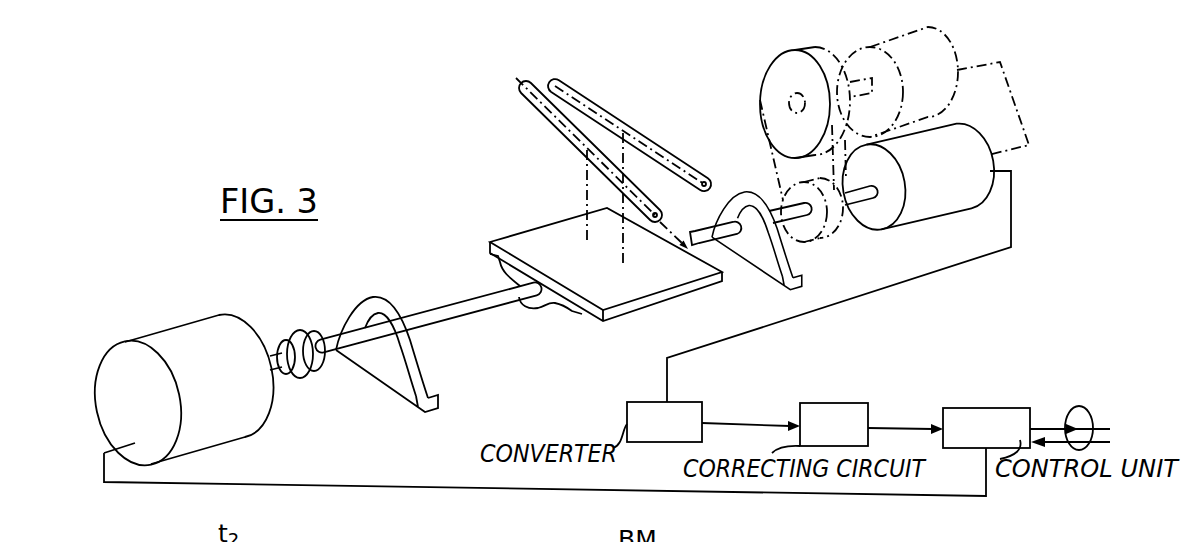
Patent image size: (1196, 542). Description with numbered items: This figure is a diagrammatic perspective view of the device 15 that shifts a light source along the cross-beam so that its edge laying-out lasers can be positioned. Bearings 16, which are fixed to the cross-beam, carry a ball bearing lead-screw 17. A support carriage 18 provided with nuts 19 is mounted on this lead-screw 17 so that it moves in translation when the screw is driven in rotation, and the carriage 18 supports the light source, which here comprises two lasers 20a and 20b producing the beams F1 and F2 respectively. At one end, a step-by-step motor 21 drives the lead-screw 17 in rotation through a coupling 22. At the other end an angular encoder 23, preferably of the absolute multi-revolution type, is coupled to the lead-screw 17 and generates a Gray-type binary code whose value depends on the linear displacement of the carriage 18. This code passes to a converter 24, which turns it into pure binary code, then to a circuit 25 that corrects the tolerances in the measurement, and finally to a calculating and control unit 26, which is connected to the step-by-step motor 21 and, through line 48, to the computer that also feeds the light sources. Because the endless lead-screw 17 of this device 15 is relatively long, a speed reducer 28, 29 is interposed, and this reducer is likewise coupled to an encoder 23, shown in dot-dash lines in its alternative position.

The device for shifting the light sources 15 is at (493, 335).
The bearings 16 is at (387, 372).
The ball bearing lead-screw 17 is at (440, 310).
The support carriage 18 is at (547, 240).
The nuts 19 is at (535, 316).
The laser 20a is at (614, 120).
The laser 20b is at (560, 120).
The step-by-step motor 21 is at (190, 338).
The coupling 22 is at (292, 330).
The angular encoder 23 is at (958, 197).
The converter 24 is at (690, 412).
The circuit for correcting the tolerances 25 is at (823, 418).
The calculating and control unit 26 is at (977, 422).
The speed reducer 28 is at (818, 228).
The speed reducer 29 is at (766, 80).
The line 48 is at (1080, 408).
The beam F1 is at (708, 188).
The beam F2 is at (676, 232).